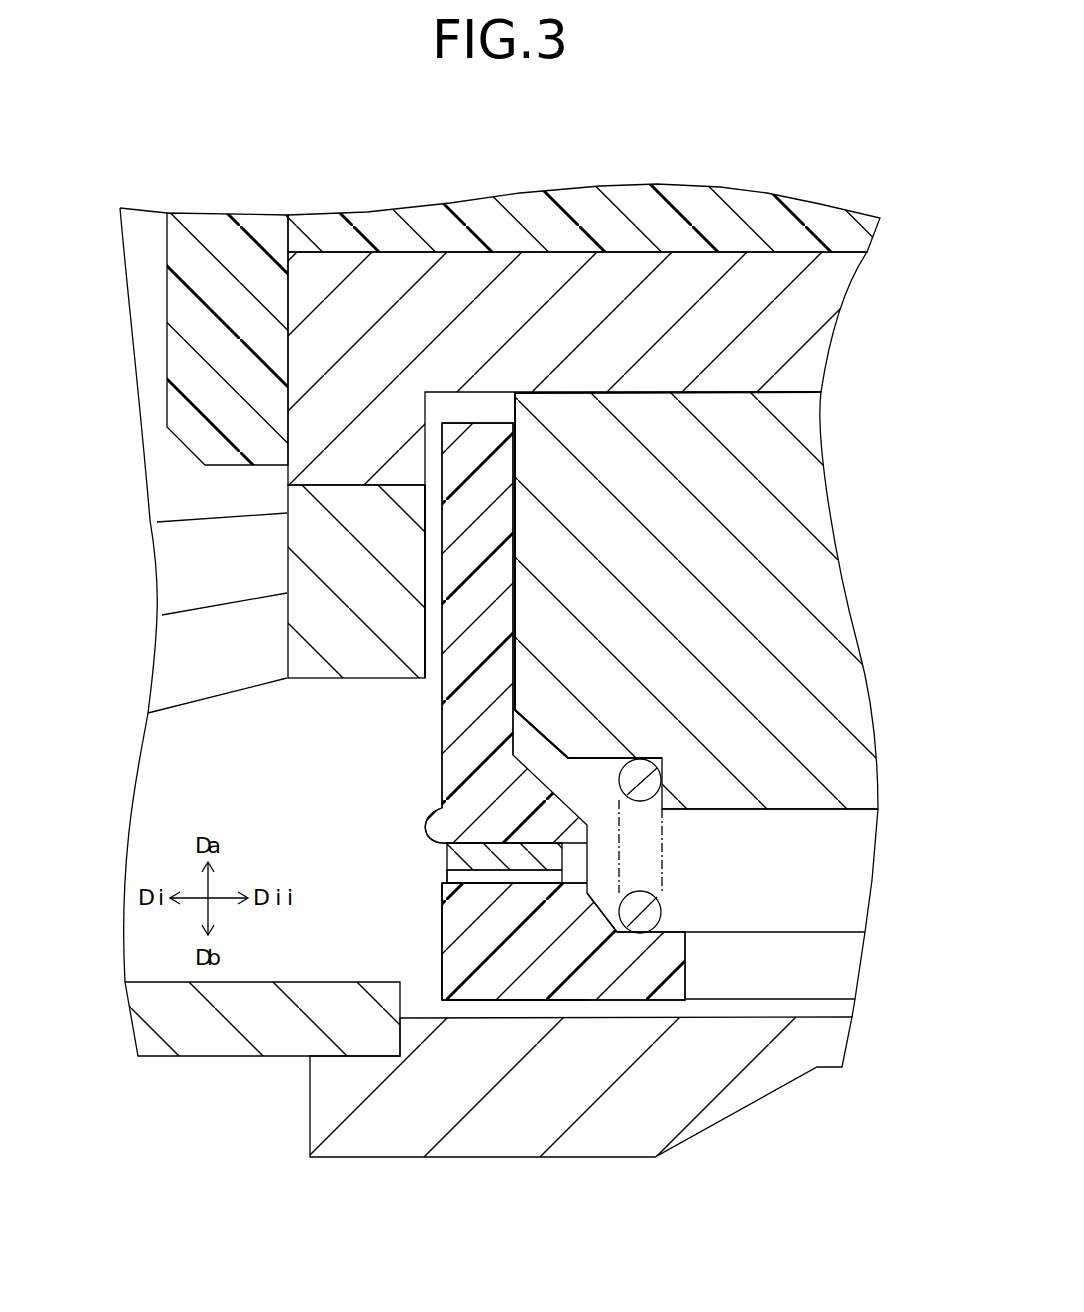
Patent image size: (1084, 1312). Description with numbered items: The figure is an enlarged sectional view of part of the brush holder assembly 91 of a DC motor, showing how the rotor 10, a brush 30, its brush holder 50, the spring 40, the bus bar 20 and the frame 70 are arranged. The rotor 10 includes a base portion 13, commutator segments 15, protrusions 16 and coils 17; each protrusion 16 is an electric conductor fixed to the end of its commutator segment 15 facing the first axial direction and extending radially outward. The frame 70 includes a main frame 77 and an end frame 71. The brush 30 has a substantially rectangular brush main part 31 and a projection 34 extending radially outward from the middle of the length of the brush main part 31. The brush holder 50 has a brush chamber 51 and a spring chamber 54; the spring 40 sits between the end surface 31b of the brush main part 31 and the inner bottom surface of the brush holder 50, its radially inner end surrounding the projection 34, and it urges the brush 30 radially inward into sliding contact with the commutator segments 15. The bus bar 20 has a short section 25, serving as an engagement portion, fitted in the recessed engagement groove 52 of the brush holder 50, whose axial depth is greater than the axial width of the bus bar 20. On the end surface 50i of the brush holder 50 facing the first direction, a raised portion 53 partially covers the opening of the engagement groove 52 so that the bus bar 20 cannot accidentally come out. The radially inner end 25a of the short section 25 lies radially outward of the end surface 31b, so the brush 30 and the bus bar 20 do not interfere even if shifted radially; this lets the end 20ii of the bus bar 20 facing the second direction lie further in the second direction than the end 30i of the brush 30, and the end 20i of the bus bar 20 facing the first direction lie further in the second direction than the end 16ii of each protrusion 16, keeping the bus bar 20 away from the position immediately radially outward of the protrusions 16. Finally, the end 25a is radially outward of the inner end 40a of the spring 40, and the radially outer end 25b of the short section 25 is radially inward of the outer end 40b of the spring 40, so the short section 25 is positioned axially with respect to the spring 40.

The rotor 10 is at (217, 232).
The base portion 13 is at (433, 220).
The commutator segments 15 is at (803, 369).
The protrusions 16 is at (370, 663).
The end of protrusion 16ii is at (420, 563).
The coils 17 is at (172, 562).
The bus bar 20 is at (447, 863).
The end of bus bar 20i is at (447, 880).
The end of bus bar 20ii is at (473, 887).
The short section 25 is at (440, 902).
The end of short section 25a is at (490, 855).
The end of short section 25b is at (460, 937).
The brush 30 is at (817, 591).
The end of brush 30i is at (517, 514).
The brush main part 31 is at (803, 481).
The end surface 31b is at (590, 768).
The projection 34 is at (866, 781).
The spring 40 is at (663, 872).
The end of spring 40a is at (645, 758).
The end of spring 40b is at (635, 937).
The brush holder 50 is at (657, 970).
The end surface 50i is at (440, 687).
The brush chamber 51 is at (520, 733).
The engagement groove 52 is at (537, 840).
The raised portion 53 is at (423, 830).
The spring chamber 54 is at (617, 932).
The frame 70 is at (488, 1097).
The end frame 71 is at (321, 1090).
The main frame 77 is at (203, 1042).
The brush holder assembly 91 is at (836, 159).